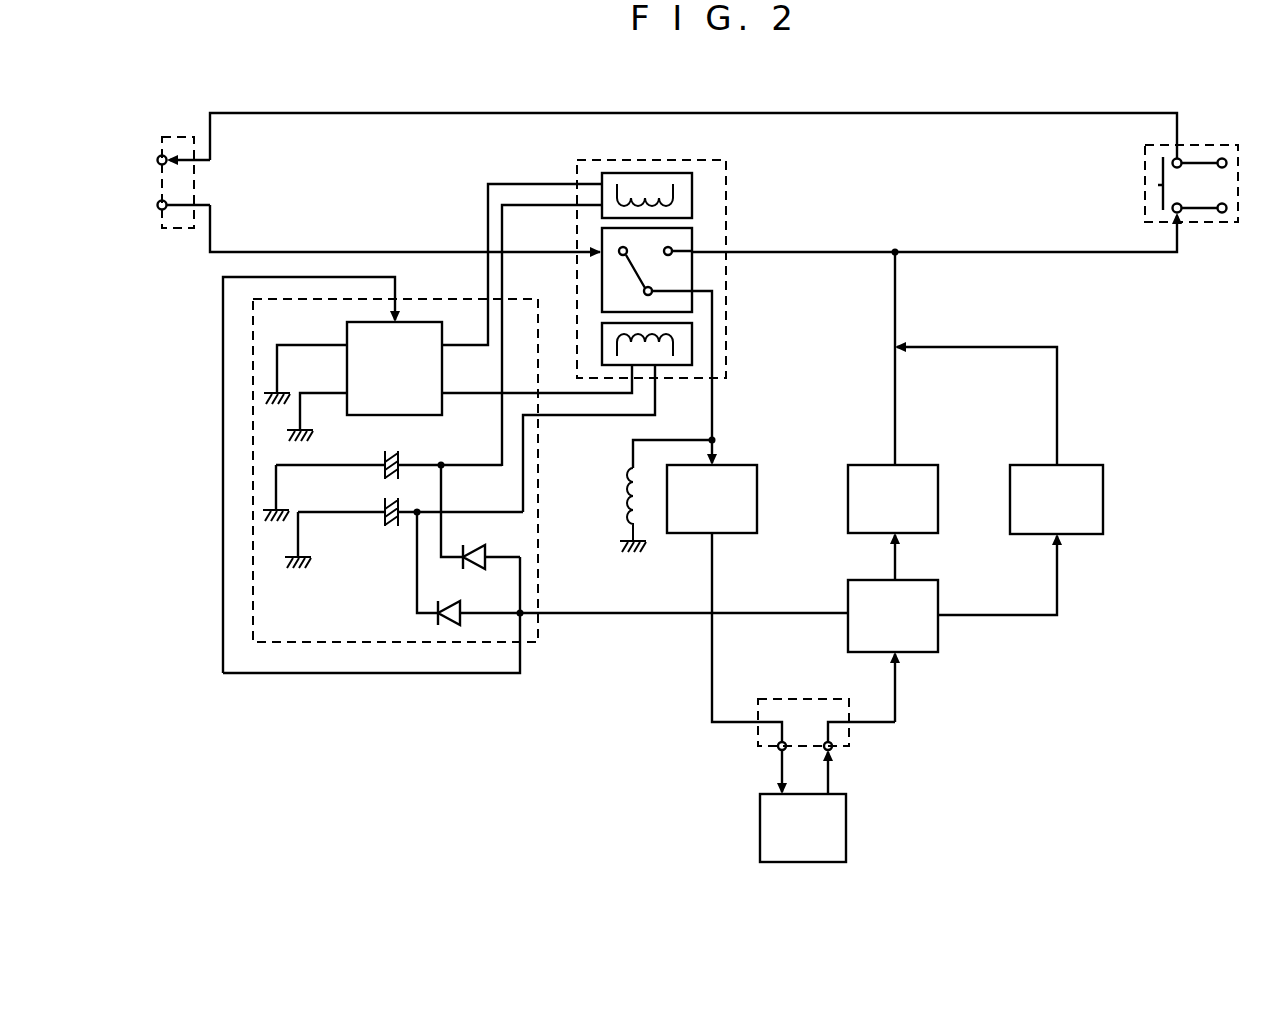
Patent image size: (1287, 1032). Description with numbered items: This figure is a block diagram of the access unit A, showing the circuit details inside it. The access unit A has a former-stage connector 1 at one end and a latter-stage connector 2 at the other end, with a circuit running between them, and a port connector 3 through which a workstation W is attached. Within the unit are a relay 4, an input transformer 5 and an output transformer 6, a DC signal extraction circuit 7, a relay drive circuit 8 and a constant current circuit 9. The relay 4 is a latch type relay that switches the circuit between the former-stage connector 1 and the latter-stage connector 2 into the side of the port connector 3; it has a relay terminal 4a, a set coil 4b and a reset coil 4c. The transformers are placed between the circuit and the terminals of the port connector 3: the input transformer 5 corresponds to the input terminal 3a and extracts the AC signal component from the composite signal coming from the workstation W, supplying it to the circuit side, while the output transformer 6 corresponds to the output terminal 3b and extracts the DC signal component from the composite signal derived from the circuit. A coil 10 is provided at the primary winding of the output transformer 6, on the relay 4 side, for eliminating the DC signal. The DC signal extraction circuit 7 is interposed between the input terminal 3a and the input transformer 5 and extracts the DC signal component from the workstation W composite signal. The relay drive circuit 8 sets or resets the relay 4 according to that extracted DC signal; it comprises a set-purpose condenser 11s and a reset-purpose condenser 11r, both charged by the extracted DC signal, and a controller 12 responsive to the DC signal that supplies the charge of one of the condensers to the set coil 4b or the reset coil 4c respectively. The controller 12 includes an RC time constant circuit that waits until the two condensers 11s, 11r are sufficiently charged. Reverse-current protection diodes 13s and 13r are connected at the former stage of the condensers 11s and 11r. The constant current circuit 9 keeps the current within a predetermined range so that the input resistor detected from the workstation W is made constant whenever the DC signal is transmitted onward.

The access unit A is at (655, 103).
The former-stage connector 1 is at (175, 136).
The latter-stage connector 2 is at (1202, 143).
The port connector 3 is at (852, 736).
The input terminal 3a is at (832, 751).
The output terminal 3b is at (780, 753).
The relay 4 is at (728, 193).
The relay terminal 4a is at (693, 240).
The set coil 4b is at (693, 341).
The reset coil 4c is at (678, 173).
The input transformer 5 is at (940, 490).
The output transformer 6 is at (786, 459).
The DC signal extraction circuit 7 is at (940, 637).
The relay drive circuit 8 is at (390, 644).
The constant current circuit 9 is at (1104, 500).
The coil 10 is at (622, 506).
The reset-purpose condenser 11r is at (405, 454).
The set-purpose condenser 11s is at (383, 523).
The controller 12 is at (411, 320).
The reverse-current protection diode 13r is at (490, 551).
The reverse-current protection diode 13s is at (450, 628).
The workstation W is at (772, 824).